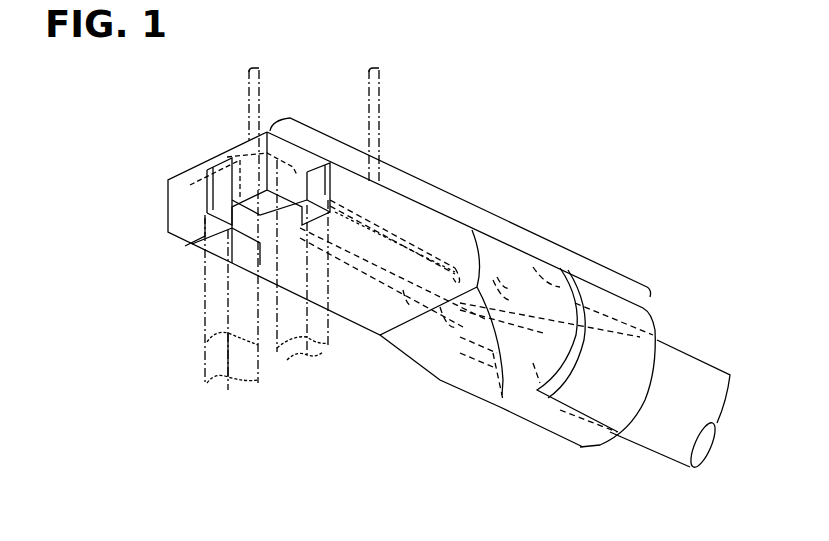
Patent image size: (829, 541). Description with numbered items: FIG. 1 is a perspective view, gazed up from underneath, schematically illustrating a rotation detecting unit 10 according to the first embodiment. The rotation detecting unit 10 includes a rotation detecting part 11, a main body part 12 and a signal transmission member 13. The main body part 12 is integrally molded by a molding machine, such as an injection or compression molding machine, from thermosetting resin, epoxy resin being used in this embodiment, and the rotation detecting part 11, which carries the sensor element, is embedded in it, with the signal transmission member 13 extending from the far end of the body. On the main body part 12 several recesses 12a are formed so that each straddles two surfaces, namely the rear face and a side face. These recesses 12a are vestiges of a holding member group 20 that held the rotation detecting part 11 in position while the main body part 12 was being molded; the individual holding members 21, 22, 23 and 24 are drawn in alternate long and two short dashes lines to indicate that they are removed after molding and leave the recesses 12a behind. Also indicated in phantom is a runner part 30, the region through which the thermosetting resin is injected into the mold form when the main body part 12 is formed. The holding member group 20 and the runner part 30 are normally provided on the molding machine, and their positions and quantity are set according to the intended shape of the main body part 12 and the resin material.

The rotation detecting unit 10 is at (548, 186).
The rotation detecting part 11 is at (248, 153).
The main body part 12 is at (447, 190).
The recess 12a is at (211, 198).
The signal transmission member 13 is at (691, 375).
The holding member group 20 is at (244, 328).
The holding member 21 is at (213, 322).
The holding member 22 is at (228, 392).
The holding member 23 is at (293, 353).
The holding member 24 is at (248, 100).
The runner part 30 is at (380, 111).